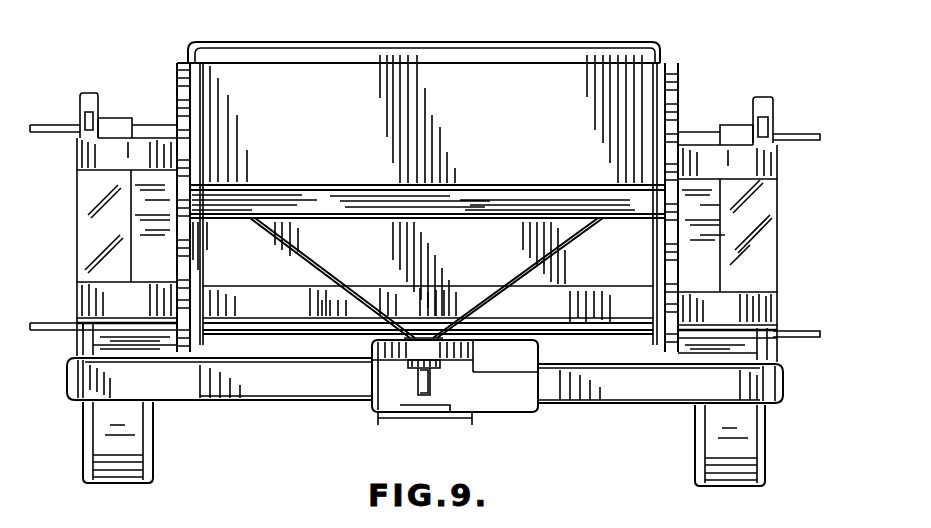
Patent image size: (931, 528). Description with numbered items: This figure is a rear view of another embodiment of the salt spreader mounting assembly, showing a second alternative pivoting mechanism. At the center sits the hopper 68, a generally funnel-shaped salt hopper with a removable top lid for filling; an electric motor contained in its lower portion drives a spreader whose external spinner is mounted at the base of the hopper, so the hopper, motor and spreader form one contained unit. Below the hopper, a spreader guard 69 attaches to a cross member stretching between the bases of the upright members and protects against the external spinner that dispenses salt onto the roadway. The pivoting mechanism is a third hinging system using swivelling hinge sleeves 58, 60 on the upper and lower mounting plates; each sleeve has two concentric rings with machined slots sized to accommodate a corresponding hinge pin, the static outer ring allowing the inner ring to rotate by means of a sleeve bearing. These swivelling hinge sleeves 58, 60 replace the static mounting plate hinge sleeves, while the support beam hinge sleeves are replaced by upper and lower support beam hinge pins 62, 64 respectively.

The upper swivelling hinge sleeve 58 is at (783, 121).
The lower swivelling hinge sleeve 60 is at (767, 345).
The upper support beam hinge pin 62 is at (757, 156).
The lower support beam hinge pin 64 is at (775, 318).
The hopper 68 is at (203, 110).
The spreader guard 69 is at (495, 358).